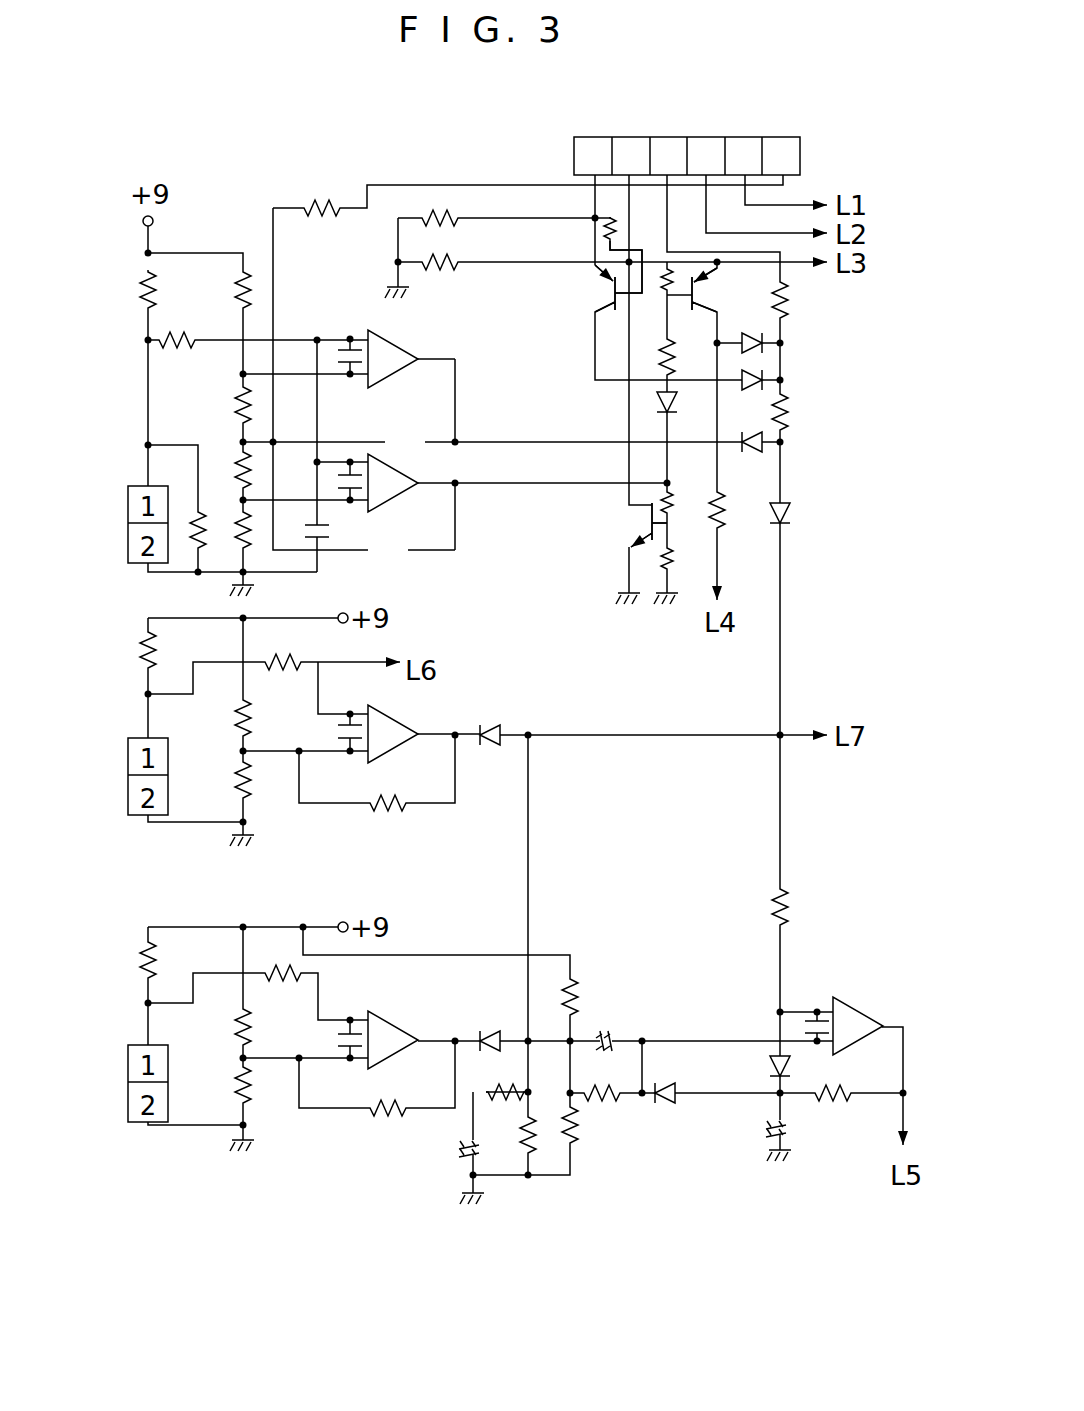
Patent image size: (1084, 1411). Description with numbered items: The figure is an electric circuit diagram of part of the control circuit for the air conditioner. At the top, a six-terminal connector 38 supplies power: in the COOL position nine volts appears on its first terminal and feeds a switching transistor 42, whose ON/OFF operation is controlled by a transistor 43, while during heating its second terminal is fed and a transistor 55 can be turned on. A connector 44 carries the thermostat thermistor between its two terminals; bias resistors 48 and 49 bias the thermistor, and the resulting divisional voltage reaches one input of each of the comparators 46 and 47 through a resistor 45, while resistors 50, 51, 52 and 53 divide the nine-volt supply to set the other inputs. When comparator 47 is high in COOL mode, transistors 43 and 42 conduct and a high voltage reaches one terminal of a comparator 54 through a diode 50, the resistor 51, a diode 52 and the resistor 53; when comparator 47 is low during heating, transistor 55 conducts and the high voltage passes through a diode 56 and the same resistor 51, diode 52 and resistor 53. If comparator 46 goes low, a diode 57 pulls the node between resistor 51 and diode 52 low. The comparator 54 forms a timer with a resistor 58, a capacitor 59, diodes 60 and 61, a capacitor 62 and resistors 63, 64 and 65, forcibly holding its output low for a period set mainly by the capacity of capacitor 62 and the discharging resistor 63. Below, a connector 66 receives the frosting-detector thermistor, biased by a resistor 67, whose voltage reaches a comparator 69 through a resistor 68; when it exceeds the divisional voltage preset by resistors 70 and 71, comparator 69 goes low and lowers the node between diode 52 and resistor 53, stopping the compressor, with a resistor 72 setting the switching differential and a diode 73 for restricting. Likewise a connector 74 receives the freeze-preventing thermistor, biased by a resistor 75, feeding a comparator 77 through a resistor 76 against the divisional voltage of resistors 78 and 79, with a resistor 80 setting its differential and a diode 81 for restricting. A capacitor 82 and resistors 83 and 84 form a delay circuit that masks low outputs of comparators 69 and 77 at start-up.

The connector 38 is at (742, 137).
The switching transistor 42 is at (594, 298).
The transistor 43 is at (636, 548).
The connector 44 is at (128, 500).
The resistor 45 is at (169, 352).
The comparator 46 is at (408, 345).
The comparator 47 is at (395, 495).
The bias resistor 48 is at (140, 294).
The bias resistor 49 is at (184, 564).
The resistor / diode 50 is at (233, 296).
The resistor 51 is at (236, 389).
The resistor / diode 52 is at (236, 452).
The resistor 53 is at (236, 555).
The comparator 54 is at (844, 1002).
The transistor 55 is at (700, 297).
The diode 56 is at (782, 322).
The diode 57 is at (782, 450).
The resistor 58 is at (822, 1114).
The capacitor 59 is at (772, 1133).
The diode 60 is at (772, 1078).
The diode 61 is at (671, 1098).
The capacitor 62 is at (610, 1036).
The discharging resistor 63 is at (620, 1110).
The resistor 64 is at (582, 990).
The resistor 65 is at (574, 1148).
The connector 66 is at (140, 814).
The resistor 67 is at (140, 665).
The resistor 68 is at (266, 655).
The comparator 69 is at (400, 725).
The resistor 70 is at (250, 722).
The resistor 71 is at (250, 794).
The resistor 72 is at (398, 806).
The diode 73 is at (494, 724).
The connector 74 is at (132, 1120).
The resistor 75 is at (146, 970).
The resistor 76 is at (282, 976).
The comparator 77 is at (402, 1022).
The resistor 78 is at (237, 1028).
The resistor 79 is at (238, 1096).
The resistor 80 is at (372, 1120).
The diode 81 is at (490, 1030).
The capacitor 82 is at (460, 1148).
The resistor 83 is at (510, 1108).
The resistor 84 is at (530, 1156).